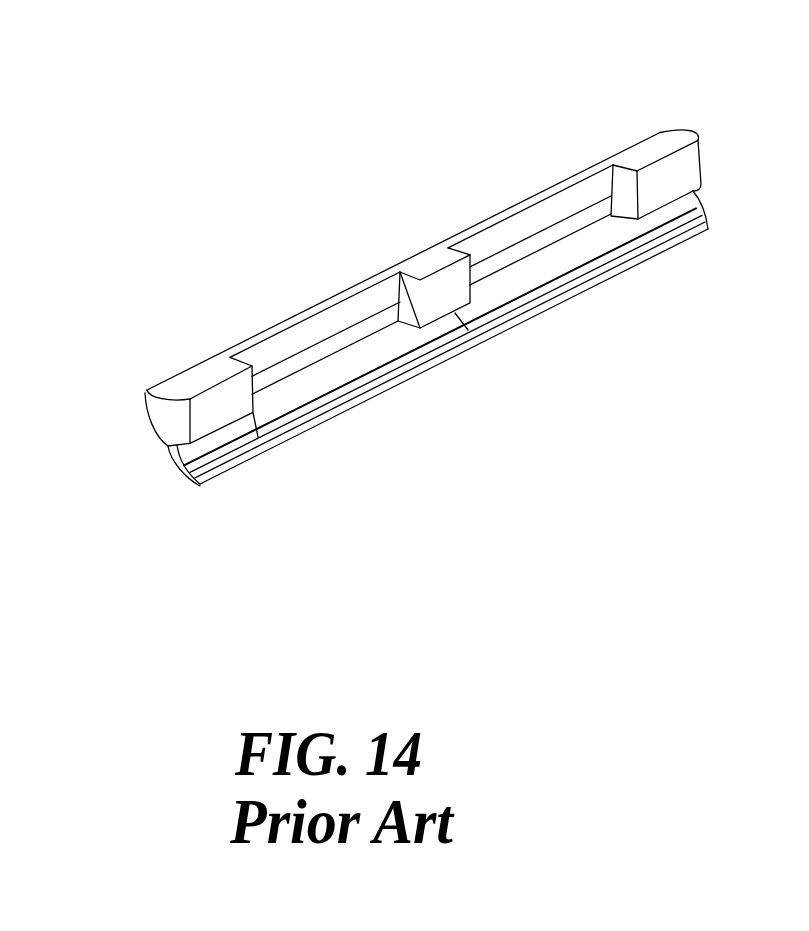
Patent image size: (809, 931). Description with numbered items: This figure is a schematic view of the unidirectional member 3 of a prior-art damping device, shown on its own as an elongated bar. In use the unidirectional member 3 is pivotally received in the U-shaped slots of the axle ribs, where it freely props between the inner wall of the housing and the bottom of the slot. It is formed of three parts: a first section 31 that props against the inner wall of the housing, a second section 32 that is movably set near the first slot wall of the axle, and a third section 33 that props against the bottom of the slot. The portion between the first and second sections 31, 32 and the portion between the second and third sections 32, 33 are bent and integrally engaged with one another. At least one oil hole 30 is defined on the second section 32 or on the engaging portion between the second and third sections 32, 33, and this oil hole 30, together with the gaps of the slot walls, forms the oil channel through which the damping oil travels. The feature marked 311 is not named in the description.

The unidirectional member 3 is at (383, 246).
The oil hole 30 is at (338, 373).
The first section 31 is at (653, 150).
The groove in slot 311 is at (547, 230).
The second section 32 is at (177, 445).
The third section 33 is at (213, 463).